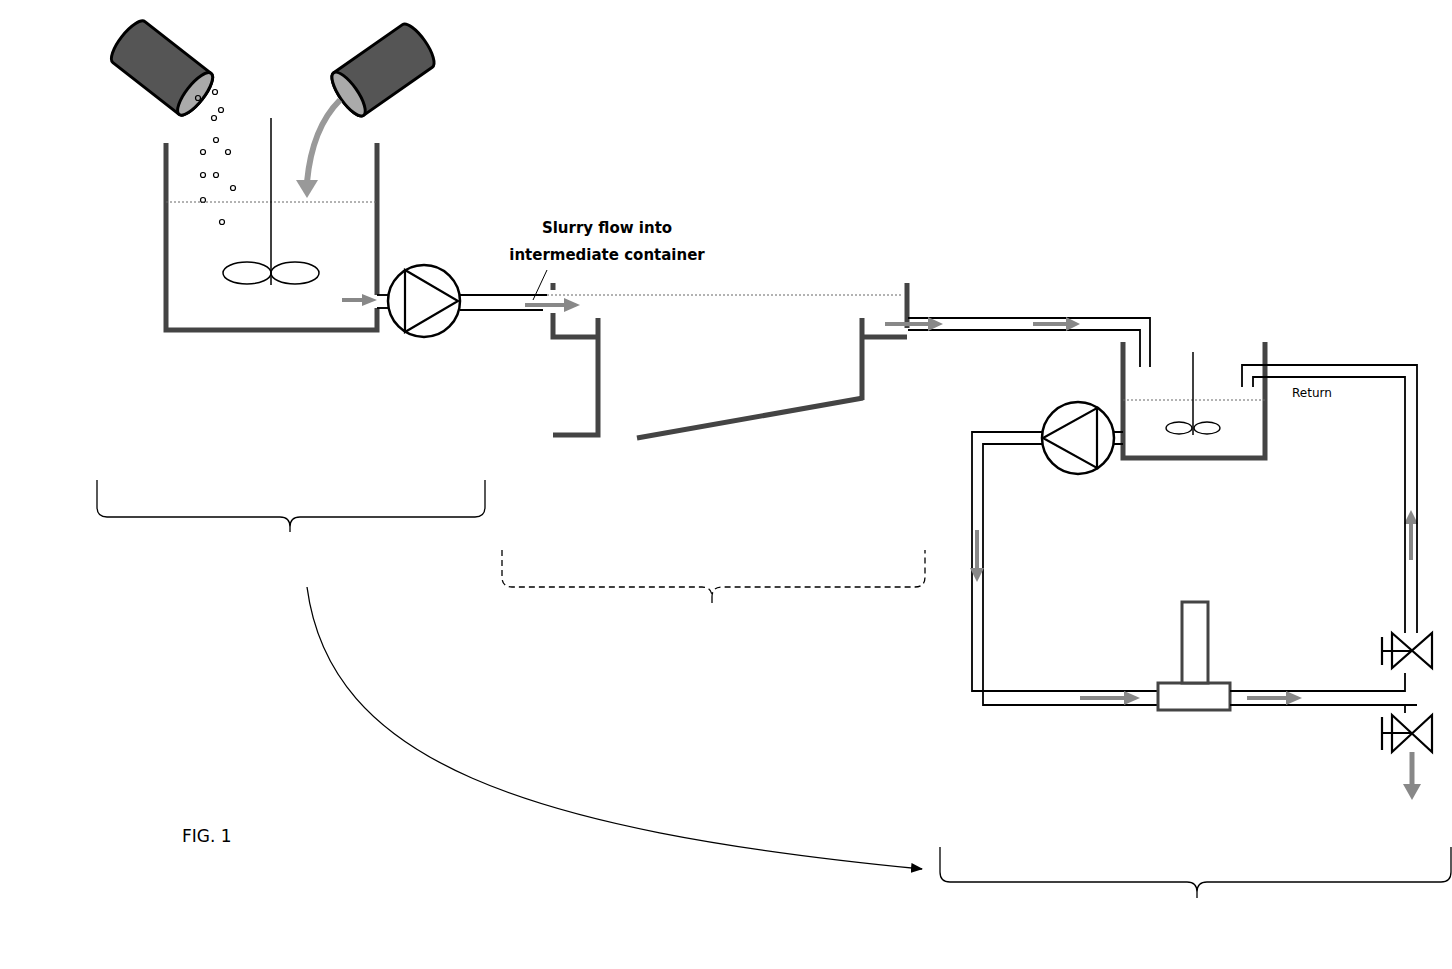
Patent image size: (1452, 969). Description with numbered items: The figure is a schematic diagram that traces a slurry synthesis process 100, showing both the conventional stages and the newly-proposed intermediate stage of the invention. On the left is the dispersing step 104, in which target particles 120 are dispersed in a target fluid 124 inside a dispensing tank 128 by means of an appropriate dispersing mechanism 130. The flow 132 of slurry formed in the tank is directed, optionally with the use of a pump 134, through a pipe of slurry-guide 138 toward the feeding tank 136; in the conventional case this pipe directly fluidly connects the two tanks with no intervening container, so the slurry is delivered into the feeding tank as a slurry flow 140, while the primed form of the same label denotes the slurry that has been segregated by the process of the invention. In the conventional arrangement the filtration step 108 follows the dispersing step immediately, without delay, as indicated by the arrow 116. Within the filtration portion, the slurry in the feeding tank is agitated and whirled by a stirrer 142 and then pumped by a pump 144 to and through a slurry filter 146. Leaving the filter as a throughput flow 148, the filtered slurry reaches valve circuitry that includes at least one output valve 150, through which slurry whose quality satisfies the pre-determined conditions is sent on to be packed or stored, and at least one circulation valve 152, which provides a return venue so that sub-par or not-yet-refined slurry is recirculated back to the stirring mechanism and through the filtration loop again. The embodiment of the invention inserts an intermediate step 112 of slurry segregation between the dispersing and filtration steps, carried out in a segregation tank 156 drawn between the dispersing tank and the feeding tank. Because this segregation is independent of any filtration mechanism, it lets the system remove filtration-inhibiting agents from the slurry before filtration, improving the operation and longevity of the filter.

The slurry synthesis process 100 is at (828, 74).
The dispersing step 104 is at (291, 525).
The filtration step 108 is at (1195, 890).
The intermediate step 112 is at (713, 592).
The arrow 116 is at (614, 728).
The target particles 120 is at (159, 120).
The target fluid 124 is at (377, 108).
The dispensing tank 128 is at (257, 257).
The dispersing mechanism 130 is at (250, 214).
The flow of slurry 132 is at (362, 308).
The pump 134 is at (484, 328).
The feeding tank 136 is at (1199, 426).
The pipe of slurry-guide 138 is at (1003, 320).
The slurry flow 140 is at (1060, 320).
The stirrer 142 is at (1212, 402).
The pump 144 is at (1082, 469).
The slurry filter 146 is at (1194, 682).
The throughput flow 148 is at (1265, 695).
The output valve 150 is at (1367, 788).
The circulation valve 152 is at (1352, 638).
The segregation tank 156 is at (727, 396).